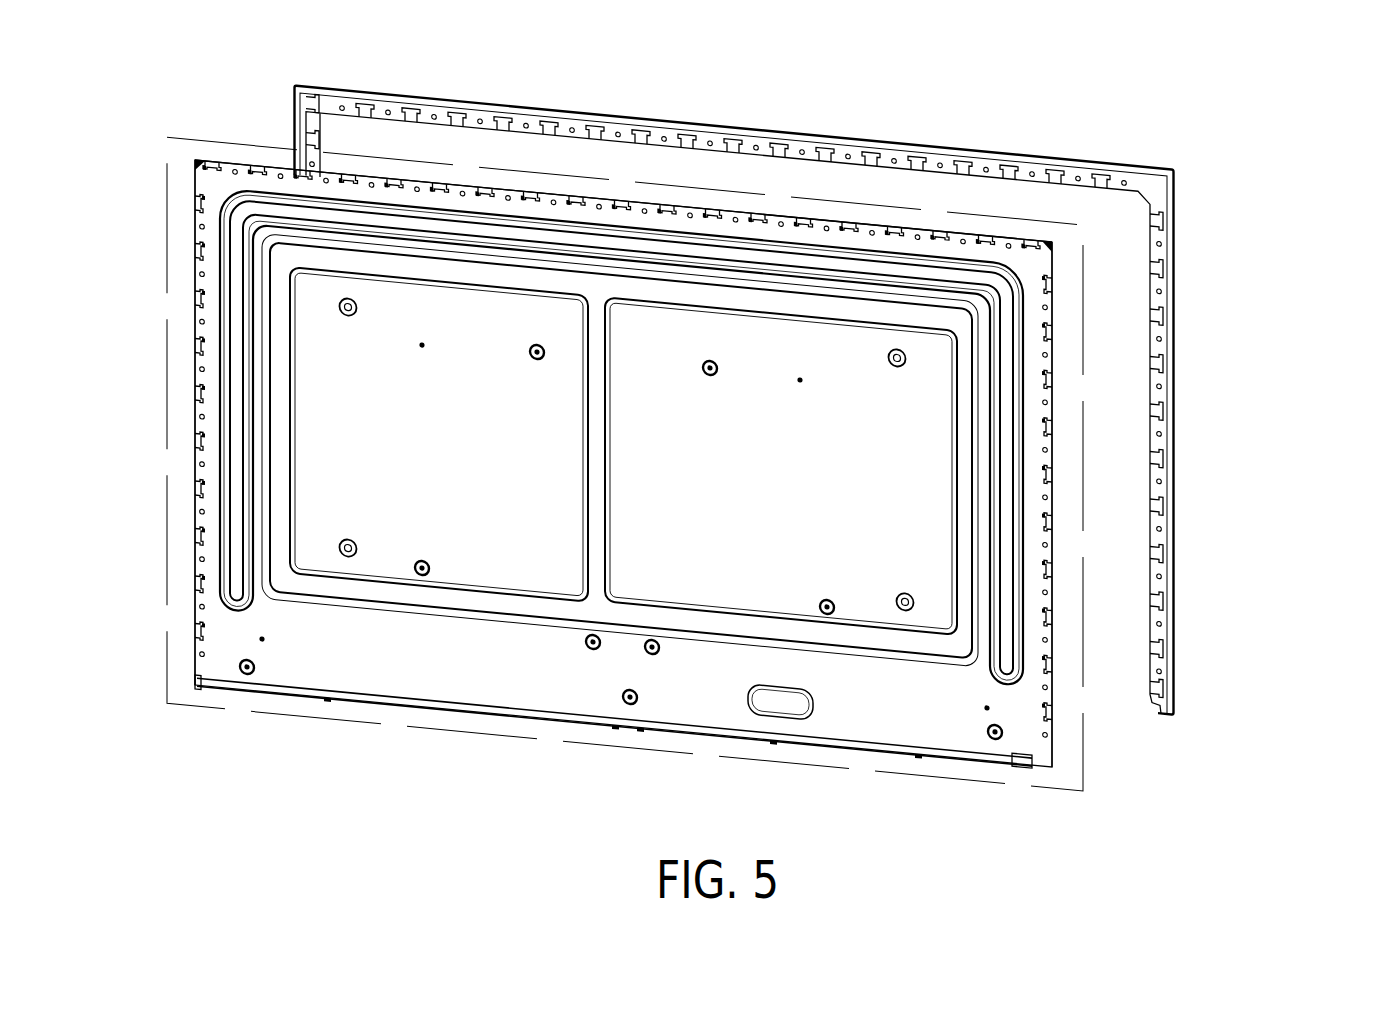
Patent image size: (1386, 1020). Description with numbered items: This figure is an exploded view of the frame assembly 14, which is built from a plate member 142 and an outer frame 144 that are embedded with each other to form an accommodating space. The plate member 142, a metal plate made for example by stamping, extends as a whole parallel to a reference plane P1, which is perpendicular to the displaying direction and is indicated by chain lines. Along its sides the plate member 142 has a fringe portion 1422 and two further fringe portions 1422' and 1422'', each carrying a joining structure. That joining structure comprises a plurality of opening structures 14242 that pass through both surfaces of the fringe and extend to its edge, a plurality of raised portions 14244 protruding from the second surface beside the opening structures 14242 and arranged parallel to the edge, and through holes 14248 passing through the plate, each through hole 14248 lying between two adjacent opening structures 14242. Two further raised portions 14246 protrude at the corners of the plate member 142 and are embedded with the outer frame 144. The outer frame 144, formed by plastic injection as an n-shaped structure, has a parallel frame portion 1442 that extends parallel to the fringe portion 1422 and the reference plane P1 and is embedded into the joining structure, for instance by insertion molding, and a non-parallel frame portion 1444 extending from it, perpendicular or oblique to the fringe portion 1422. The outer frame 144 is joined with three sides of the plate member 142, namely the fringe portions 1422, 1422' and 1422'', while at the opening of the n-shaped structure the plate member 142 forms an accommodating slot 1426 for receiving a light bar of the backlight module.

The frame assembly 14 is at (80, 66).
The plate member 142 is at (690, 435).
The fringe portion 1422 is at (1163, 504).
The fringe portion 1422' is at (623, 151).
The fringe portion 1422'' is at (143, 423).
The opening structure 14242 is at (1048, 477).
The raised portion 14244 is at (1044, 478).
The raised portion 14246 is at (197, 160).
The through hole 14248 is at (1047, 448).
The accommodating slot 1426 is at (840, 745).
The outer frame 144 is at (840, 400).
The parallel frame portion 1442 is at (1160, 398).
The non-parallel frame portion 1444 is at (1172, 330).
The reference plane P1 is at (243, 712).